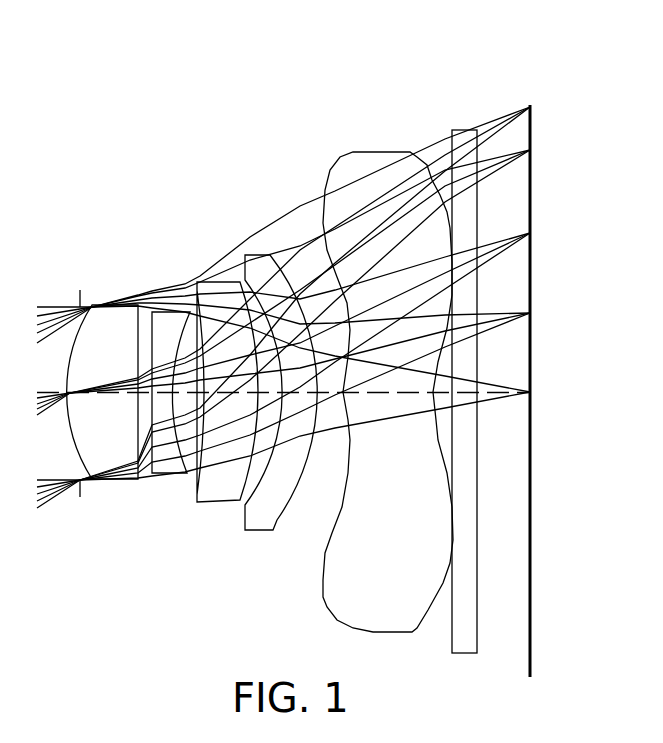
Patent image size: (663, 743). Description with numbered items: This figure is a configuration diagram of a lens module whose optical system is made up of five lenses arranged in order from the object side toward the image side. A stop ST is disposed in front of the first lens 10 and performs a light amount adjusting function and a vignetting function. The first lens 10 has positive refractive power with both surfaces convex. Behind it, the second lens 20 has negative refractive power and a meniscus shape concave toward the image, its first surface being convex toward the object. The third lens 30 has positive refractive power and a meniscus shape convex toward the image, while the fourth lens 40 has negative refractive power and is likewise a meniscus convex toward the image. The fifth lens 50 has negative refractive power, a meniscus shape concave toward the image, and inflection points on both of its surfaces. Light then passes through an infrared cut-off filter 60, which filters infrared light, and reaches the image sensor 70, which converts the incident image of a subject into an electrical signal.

The stop ST is at (80, 290).
The first lens 10 is at (115, 333).
The second lens 20 is at (165, 335).
The third lens 30 is at (215, 293).
The fourth lens 40 is at (257, 262).
The fifth lens 50 is at (352, 170).
The infrared cut-off filter 60 is at (462, 138).
The image sensor 70 is at (533, 118).